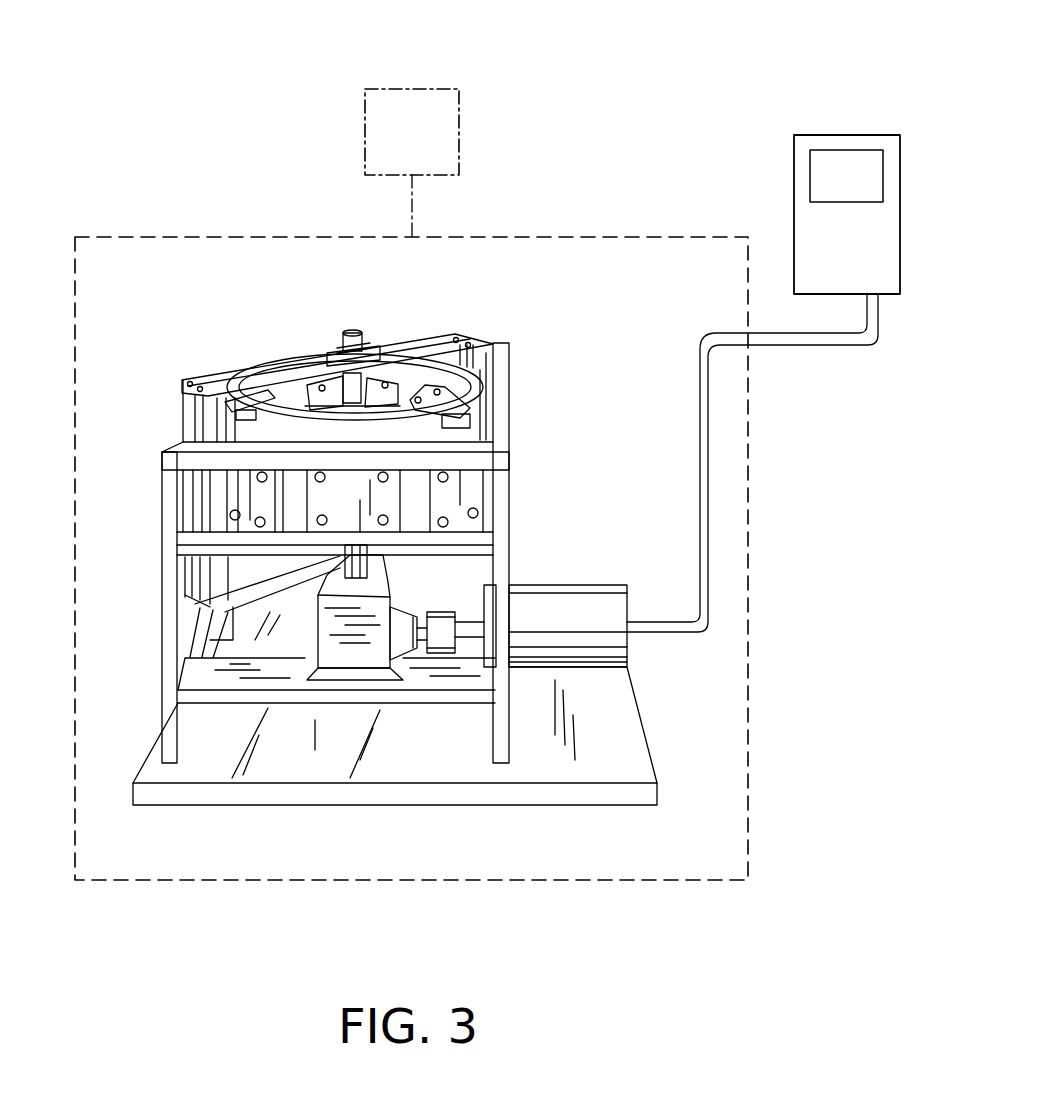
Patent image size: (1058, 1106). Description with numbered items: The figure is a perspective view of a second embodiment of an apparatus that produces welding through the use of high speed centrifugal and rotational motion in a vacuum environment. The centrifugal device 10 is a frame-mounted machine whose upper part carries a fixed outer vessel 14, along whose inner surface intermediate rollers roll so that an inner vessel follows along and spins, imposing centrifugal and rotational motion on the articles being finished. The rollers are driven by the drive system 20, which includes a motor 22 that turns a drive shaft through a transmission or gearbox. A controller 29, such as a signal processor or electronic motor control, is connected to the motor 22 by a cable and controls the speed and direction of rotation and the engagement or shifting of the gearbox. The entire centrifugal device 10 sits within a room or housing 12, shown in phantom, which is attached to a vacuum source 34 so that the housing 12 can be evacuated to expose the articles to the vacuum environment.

The centrifugal device 10 is at (506, 440).
The housing 12 is at (749, 568).
The outer vessel 14 is at (480, 374).
The drive system 20 is at (467, 597).
The motor 22 is at (563, 620).
The controller 29 is at (890, 258).
The vacuum source 34 is at (440, 89).